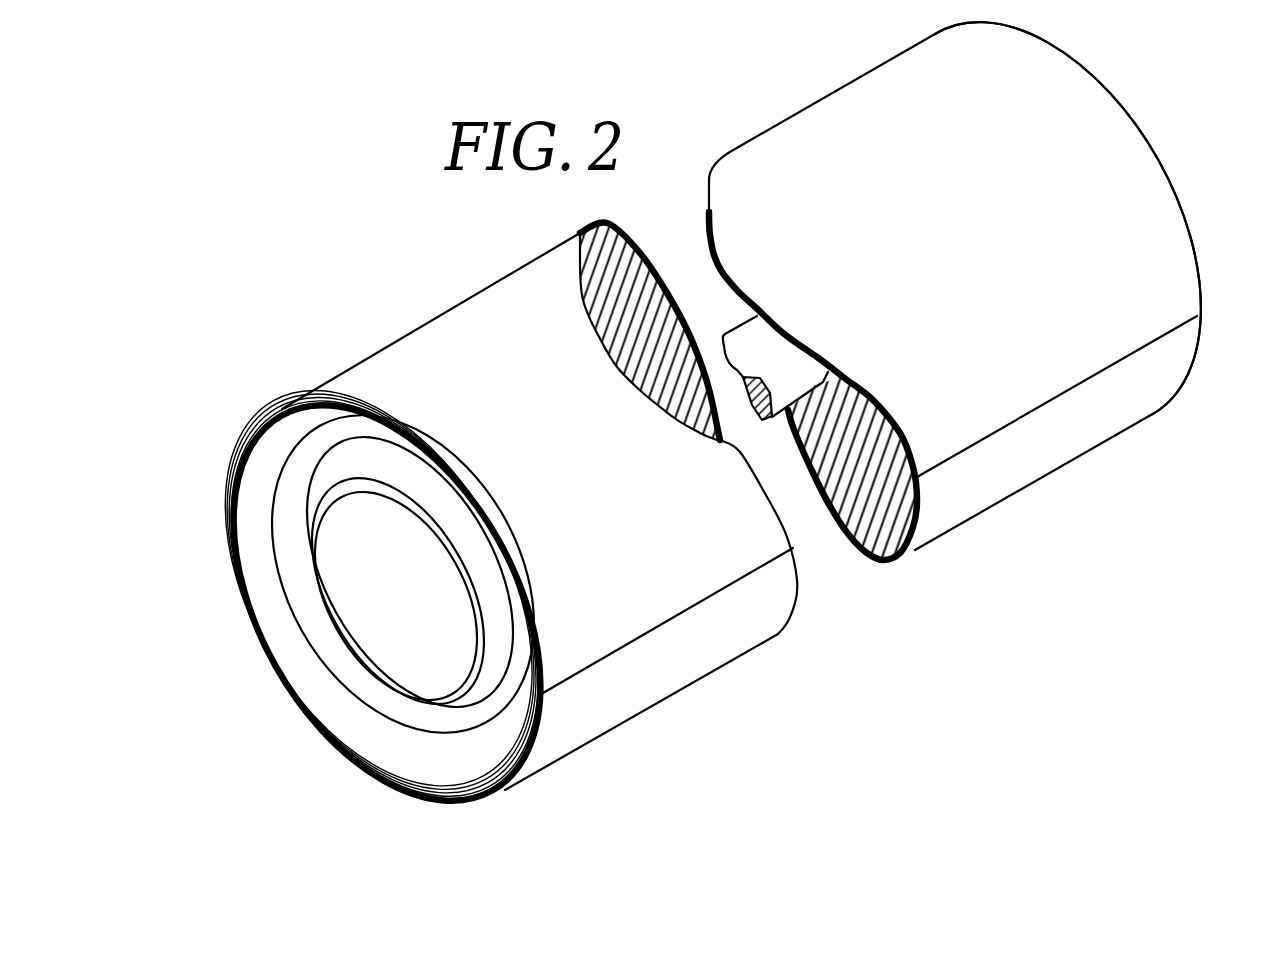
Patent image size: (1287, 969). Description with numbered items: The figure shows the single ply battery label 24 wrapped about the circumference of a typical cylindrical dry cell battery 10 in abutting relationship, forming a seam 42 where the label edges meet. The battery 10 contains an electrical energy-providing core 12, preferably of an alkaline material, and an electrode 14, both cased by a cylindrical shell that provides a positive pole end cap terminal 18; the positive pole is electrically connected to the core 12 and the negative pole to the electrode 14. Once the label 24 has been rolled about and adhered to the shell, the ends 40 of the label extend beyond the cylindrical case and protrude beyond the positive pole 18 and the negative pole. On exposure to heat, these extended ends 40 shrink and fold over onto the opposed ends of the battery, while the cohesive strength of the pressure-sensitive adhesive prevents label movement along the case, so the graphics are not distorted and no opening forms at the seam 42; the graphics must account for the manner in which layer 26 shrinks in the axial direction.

The cylindrical dry cell battery 10 is at (320, 666).
The electrical energy-providing core 12 is at (885, 565).
The electrode 14 is at (755, 338).
The positive pole end cap terminal 18 is at (513, 730).
The single ply battery label 24 is at (1085, 442).
The layer 26 is at (1113, 245).
The ends of the label 40 is at (270, 562).
The seam 42 is at (637, 640).